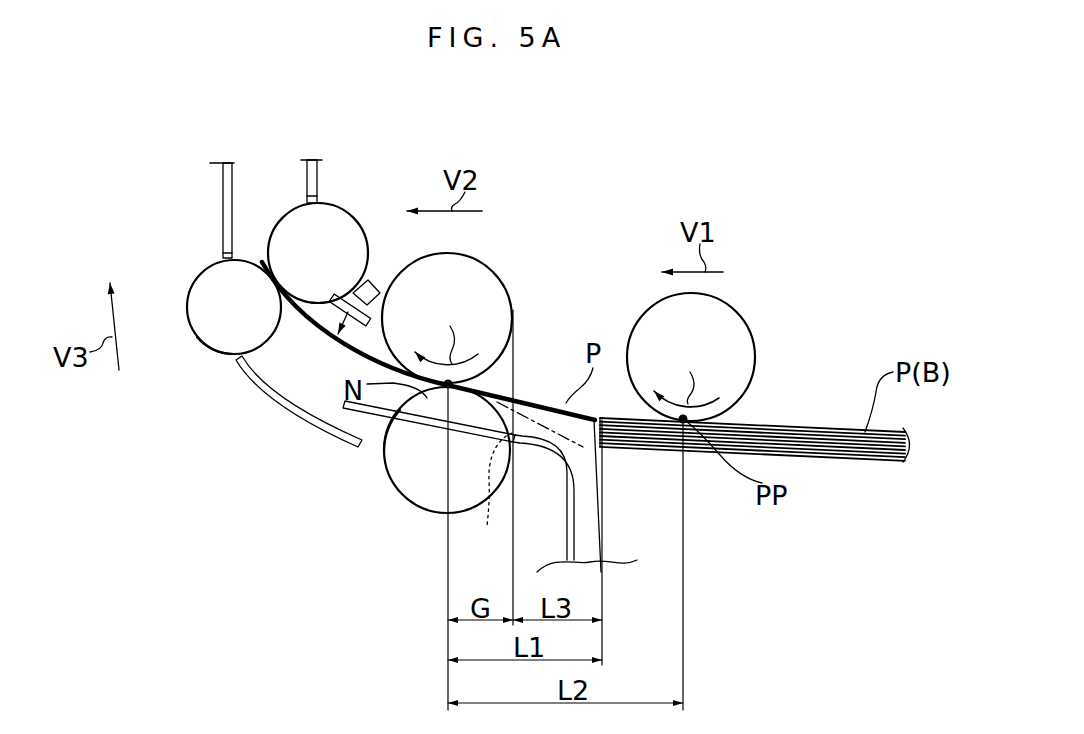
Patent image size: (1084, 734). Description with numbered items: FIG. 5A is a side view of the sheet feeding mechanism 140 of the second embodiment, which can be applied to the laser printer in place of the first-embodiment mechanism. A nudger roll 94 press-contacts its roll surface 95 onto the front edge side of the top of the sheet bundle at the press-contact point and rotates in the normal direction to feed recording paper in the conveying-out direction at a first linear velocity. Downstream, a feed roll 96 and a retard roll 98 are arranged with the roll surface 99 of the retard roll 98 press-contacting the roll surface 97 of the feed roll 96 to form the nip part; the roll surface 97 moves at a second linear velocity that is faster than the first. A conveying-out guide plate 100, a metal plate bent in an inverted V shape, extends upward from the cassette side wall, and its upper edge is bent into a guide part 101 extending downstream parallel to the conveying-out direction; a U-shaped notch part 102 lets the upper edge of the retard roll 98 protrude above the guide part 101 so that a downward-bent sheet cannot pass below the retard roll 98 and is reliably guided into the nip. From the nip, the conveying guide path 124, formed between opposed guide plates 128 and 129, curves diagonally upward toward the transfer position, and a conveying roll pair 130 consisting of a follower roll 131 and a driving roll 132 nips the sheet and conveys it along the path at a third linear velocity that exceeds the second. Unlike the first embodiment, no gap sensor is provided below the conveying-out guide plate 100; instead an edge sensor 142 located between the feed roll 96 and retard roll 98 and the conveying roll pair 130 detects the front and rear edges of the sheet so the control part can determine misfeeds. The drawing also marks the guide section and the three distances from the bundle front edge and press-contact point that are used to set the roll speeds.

The sheet feeding mechanism 140 is at (657, 155).
The guide plate 128 is at (222, 193).
The guide plate 129 is at (313, 172).
The conveying roll pair 130 is at (182, 287).
The follower roll 131 is at (207, 348).
The driving roll 132 is at (343, 210).
The edge sensor 142 is at (357, 283).
The conveying guide path 124 is at (260, 403).
The feed roll 96 is at (443, 387).
The roll surface 97 is at (480, 253).
The retard roll 98 is at (398, 482).
The roll surface 99 is at (400, 498).
The guide part 101 is at (419, 447).
The notch part 102 is at (485, 494).
The conveying-out guide plate 100 is at (577, 528).
The nudger roll 94 is at (733, 330).
The roll surface 95 is at (755, 332).